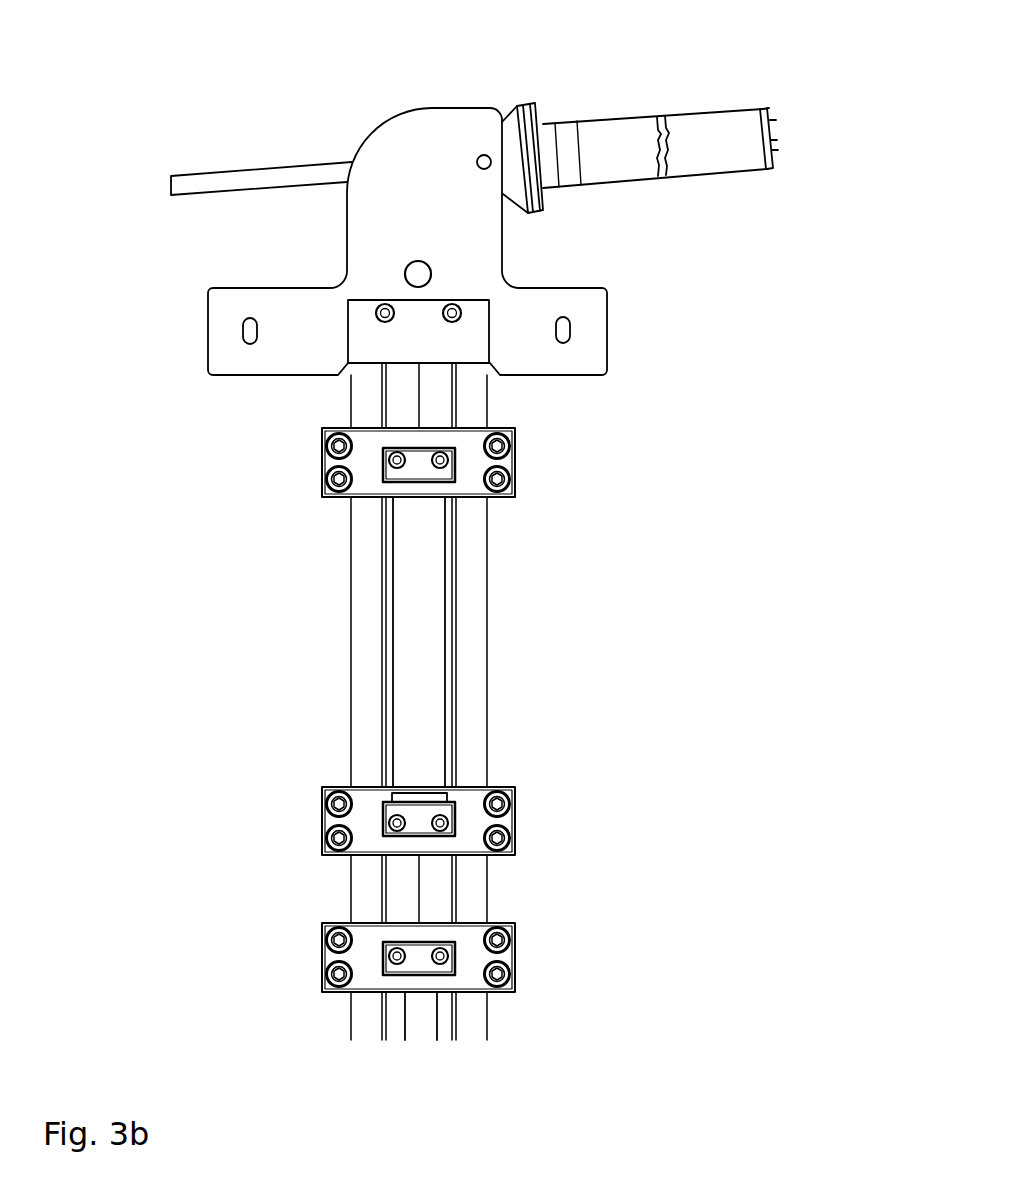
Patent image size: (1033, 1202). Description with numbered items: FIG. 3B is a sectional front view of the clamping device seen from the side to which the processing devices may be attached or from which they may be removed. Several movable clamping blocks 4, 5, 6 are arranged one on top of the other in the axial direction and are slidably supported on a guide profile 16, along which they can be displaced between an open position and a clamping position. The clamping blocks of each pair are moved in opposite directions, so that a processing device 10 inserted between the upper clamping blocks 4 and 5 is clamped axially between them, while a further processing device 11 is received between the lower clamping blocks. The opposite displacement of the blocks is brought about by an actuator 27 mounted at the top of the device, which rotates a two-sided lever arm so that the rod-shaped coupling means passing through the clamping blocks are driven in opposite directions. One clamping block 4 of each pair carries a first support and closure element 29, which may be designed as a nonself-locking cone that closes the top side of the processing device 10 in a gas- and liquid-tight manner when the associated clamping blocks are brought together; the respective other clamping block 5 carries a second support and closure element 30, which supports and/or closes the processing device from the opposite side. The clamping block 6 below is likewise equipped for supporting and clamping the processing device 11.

The actuator 27 is at (605, 137).
The movable clamping block 4 is at (380, 501).
The first support and closure element 29 is at (418, 470).
The processing device 10 is at (427, 617).
The guide profile 16 is at (470, 688).
The second support and closure element 30 is at (413, 817).
The movable clamping block 5 is at (373, 777).
The movable clamping block 6 is at (515, 958).
The processing device 11 is at (470, 1017).